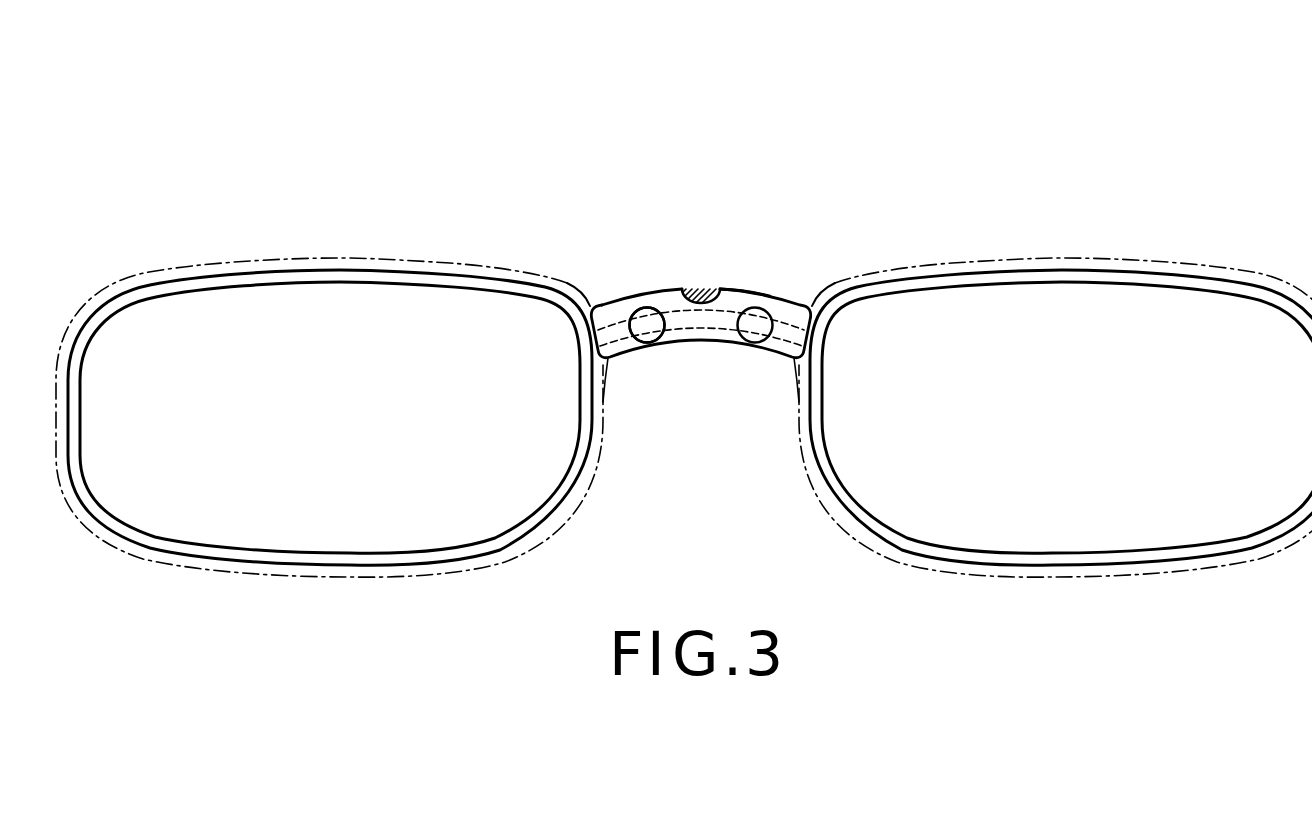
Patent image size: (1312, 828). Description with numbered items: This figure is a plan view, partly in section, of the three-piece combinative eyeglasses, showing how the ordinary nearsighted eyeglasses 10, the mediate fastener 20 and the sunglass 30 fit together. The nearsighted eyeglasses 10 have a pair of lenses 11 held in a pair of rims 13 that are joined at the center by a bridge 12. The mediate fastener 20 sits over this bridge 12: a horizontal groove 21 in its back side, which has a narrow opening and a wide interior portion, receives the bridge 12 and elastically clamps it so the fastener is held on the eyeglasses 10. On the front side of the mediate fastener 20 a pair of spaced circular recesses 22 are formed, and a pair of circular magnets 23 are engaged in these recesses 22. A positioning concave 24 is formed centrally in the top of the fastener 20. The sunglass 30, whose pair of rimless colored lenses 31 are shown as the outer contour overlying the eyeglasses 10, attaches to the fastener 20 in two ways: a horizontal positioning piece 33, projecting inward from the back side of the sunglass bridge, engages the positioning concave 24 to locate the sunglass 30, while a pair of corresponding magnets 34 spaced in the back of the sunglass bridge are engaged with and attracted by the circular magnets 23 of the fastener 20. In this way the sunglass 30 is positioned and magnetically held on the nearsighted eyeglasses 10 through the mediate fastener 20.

The ordinary nearsighted eyeglasses 10 is at (1037, 212).
The lenses 11 is at (970, 320).
The bridge 12 is at (700, 344).
The rims 13 is at (883, 288).
The mediate fastener 20 is at (783, 256).
The horizontal groove 21 is at (731, 333).
The circular recesses 22 is at (650, 343).
The circular magnets 23 is at (640, 310).
The positioning concave 24 is at (716, 290).
The sunglass 30 is at (684, 354).
The rimless colored lenses 31 is at (1125, 260).
The horizontal positioning piece 33 is at (689, 288).
The corresponding magnets 34 is at (647, 325).